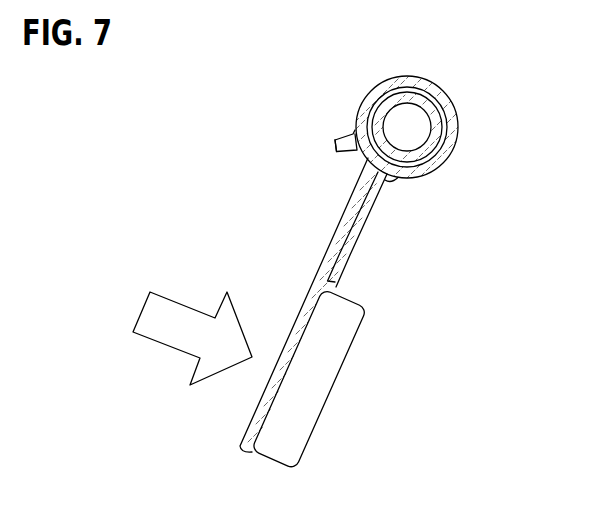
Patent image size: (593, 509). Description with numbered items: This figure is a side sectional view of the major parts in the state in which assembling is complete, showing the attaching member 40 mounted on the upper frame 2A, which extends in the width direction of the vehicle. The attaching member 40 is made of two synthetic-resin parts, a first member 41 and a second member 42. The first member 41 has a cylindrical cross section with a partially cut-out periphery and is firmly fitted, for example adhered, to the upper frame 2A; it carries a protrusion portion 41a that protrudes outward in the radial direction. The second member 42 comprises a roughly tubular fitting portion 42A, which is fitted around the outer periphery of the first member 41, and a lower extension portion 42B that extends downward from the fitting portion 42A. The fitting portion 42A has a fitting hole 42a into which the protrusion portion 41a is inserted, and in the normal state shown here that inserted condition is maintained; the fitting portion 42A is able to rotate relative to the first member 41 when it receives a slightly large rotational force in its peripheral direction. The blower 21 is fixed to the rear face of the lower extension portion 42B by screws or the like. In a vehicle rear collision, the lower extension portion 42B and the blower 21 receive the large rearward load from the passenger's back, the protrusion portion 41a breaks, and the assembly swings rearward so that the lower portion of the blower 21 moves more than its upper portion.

The attaching member 40 is at (456, 127).
The first member 41 is at (452, 142).
The second member 42 is at (310, 305).
The lower extension portion 42B is at (343, 233).
The fitting portion 42A is at (420, 78).
The fitting hole 42a is at (343, 137).
The protrusion portion 41a is at (335, 144).
The upper frame 2A is at (447, 100).
The blower 21 is at (322, 377).